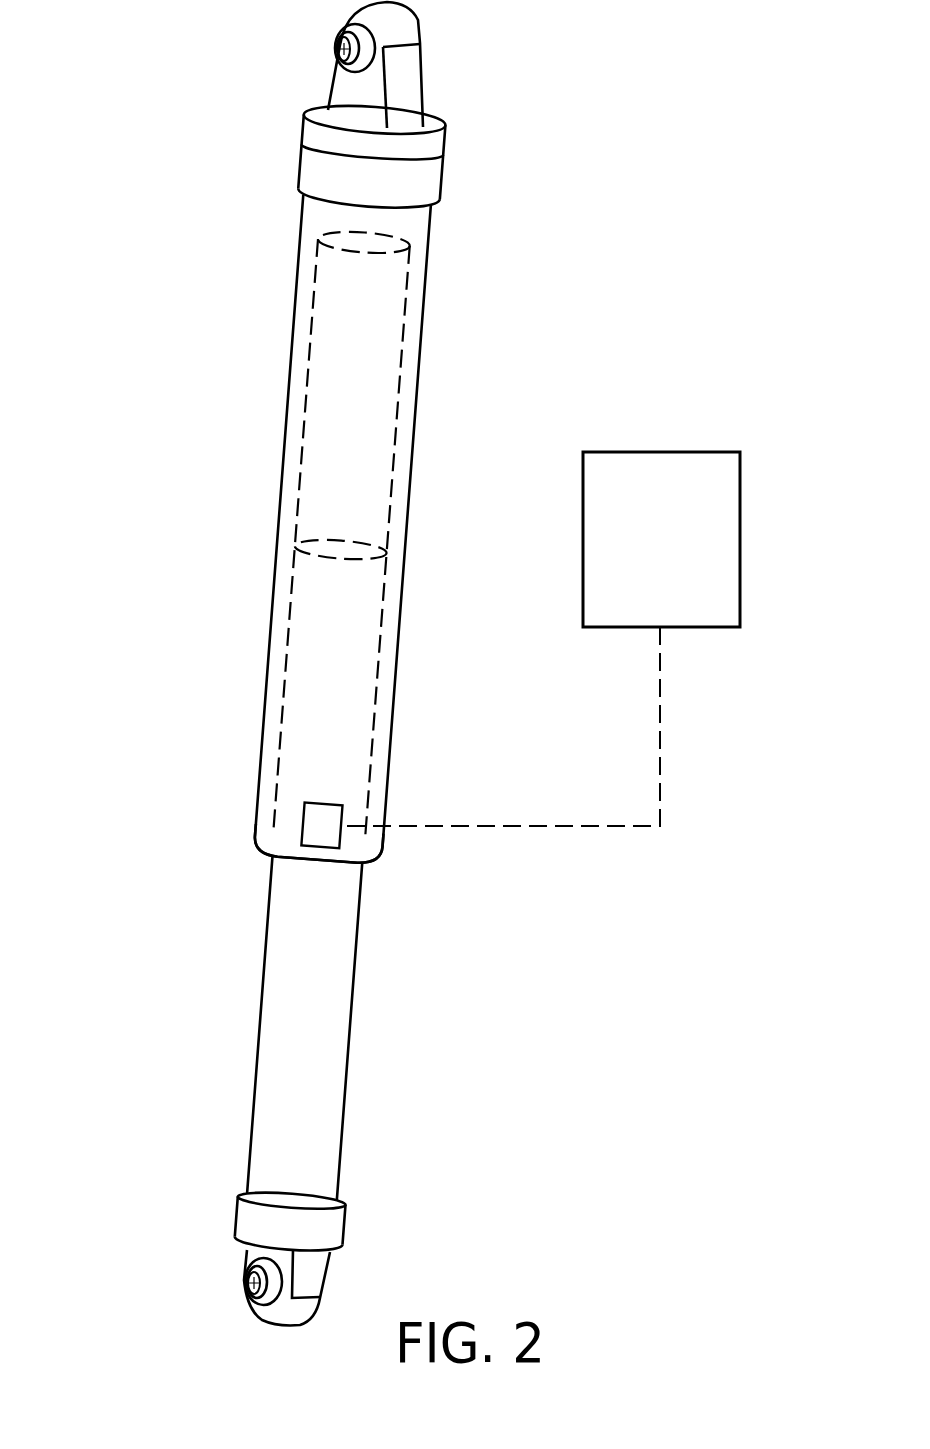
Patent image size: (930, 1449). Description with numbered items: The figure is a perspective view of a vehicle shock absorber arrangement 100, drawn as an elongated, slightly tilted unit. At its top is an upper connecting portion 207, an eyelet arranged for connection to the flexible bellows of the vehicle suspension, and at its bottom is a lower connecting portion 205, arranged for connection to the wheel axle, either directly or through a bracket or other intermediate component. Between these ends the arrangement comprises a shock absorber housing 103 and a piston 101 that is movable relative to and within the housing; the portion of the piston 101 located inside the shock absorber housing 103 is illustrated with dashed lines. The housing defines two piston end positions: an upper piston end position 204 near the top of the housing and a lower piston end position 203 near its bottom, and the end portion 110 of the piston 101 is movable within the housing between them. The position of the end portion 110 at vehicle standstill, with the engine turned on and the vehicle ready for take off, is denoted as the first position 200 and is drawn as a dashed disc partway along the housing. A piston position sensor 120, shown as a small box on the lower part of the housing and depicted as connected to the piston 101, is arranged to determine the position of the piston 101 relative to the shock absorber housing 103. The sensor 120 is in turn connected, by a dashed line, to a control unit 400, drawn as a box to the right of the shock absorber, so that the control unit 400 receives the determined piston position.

The vehicle shock absorber arrangement 100 is at (112, 314).
The piston 101 is at (298, 1054).
The shock absorber housing 103 is at (290, 347).
The end portion of the piston 110 is at (345, 547).
The piston position sensor 120 is at (304, 813).
The first position 200 is at (297, 546).
The lower piston end position 203 is at (255, 828).
The upper piston end position 204 is at (320, 242).
The lower connecting portion 205 is at (253, 1283).
The upper connecting portion 207 is at (337, 48).
The control unit 400 is at (660, 452).